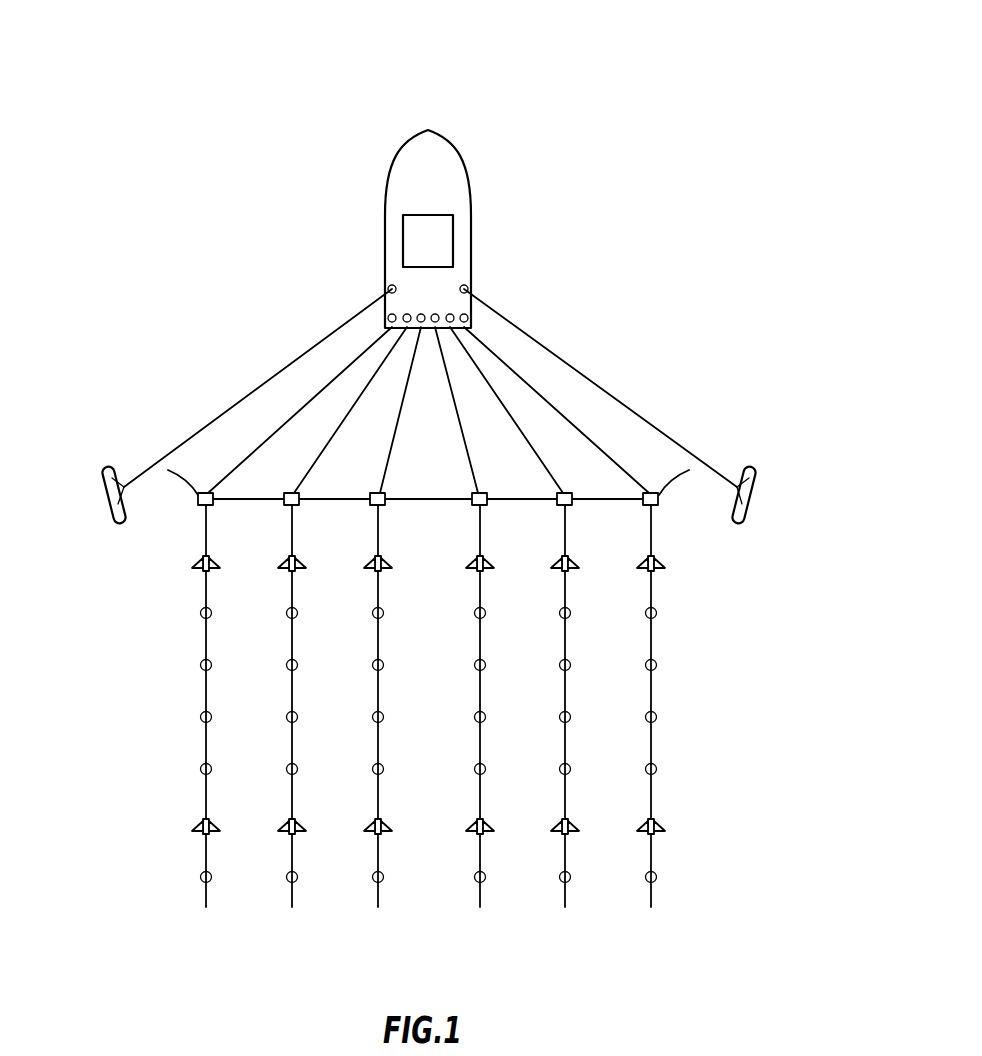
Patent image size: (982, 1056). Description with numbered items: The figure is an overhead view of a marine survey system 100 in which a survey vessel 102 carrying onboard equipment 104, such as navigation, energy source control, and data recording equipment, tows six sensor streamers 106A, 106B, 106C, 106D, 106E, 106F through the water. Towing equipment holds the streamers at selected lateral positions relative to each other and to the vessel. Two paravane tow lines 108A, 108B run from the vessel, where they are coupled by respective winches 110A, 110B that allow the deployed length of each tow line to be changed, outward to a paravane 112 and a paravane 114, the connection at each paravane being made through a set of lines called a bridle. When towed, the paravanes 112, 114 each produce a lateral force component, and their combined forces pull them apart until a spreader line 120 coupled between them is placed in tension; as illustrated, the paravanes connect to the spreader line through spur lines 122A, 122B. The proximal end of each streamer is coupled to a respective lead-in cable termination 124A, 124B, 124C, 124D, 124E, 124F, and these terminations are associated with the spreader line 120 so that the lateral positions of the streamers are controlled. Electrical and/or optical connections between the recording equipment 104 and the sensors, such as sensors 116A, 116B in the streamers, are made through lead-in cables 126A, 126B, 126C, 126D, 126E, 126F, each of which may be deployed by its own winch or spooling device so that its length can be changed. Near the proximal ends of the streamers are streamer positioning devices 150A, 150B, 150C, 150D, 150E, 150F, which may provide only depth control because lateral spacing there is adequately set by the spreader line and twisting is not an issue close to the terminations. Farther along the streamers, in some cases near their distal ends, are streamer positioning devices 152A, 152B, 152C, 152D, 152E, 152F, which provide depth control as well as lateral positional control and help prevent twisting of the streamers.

The marine survey system 100 is at (243, 90).
The survey vessel 102 is at (388, 178).
The onboard equipment 104 is at (453, 230).
The sensor streamer 106A is at (205, 907).
The sensor streamer 106B is at (292, 907).
The sensor streamer 106C is at (378, 907).
The sensor streamer 106D is at (480, 907).
The sensor streamer 106E is at (565, 907).
The sensor streamer 106F is at (651, 907).
The paravane tow line 108A is at (360, 313).
The paravane tow line 108B is at (592, 382).
The winch 110A is at (387, 287).
The winch 110B is at (469, 283).
The paravane 112 is at (118, 522).
The paravane 114 is at (756, 470).
The sensor 116A is at (201, 722).
The sensor 116B is at (201, 772).
The spreader line 120 is at (401, 497).
The spur line 122A is at (192, 490).
The spur line 122B is at (667, 492).
The lead-in cable termination 124A is at (211, 506).
The lead-in cable termination 124B is at (297, 506).
The lead-in cable termination 124C is at (383, 506).
The lead-in cable termination 124D is at (485, 506).
The lead-in cable termination 124E is at (570, 506).
The lead-in cable termination 124F is at (658, 505).
The lead-in cable 126A is at (355, 360).
The lead-in cable 126B is at (360, 396).
The lead-in cable 126C is at (393, 437).
The lead-in cable 126D is at (445, 365).
The lead-in cable 126E is at (492, 387).
The lead-in cable 126F is at (577, 427).
The streamer positioning device 150A is at (197, 568).
The streamer positioning device 150B is at (283, 570).
The streamer positioning device 150C is at (370, 570).
The streamer positioning device 150D is at (472, 570).
The streamer positioning device 150E is at (557, 570).
The streamer positioning device 150F is at (644, 570).
The streamer positioning device 152A is at (197, 832).
The streamer positioning device 152B is at (283, 834).
The streamer positioning device 152C is at (370, 834).
The streamer positioning device 152D is at (473, 834).
The streamer positioning device 152E is at (558, 834).
The streamer positioning device 152F is at (644, 834).